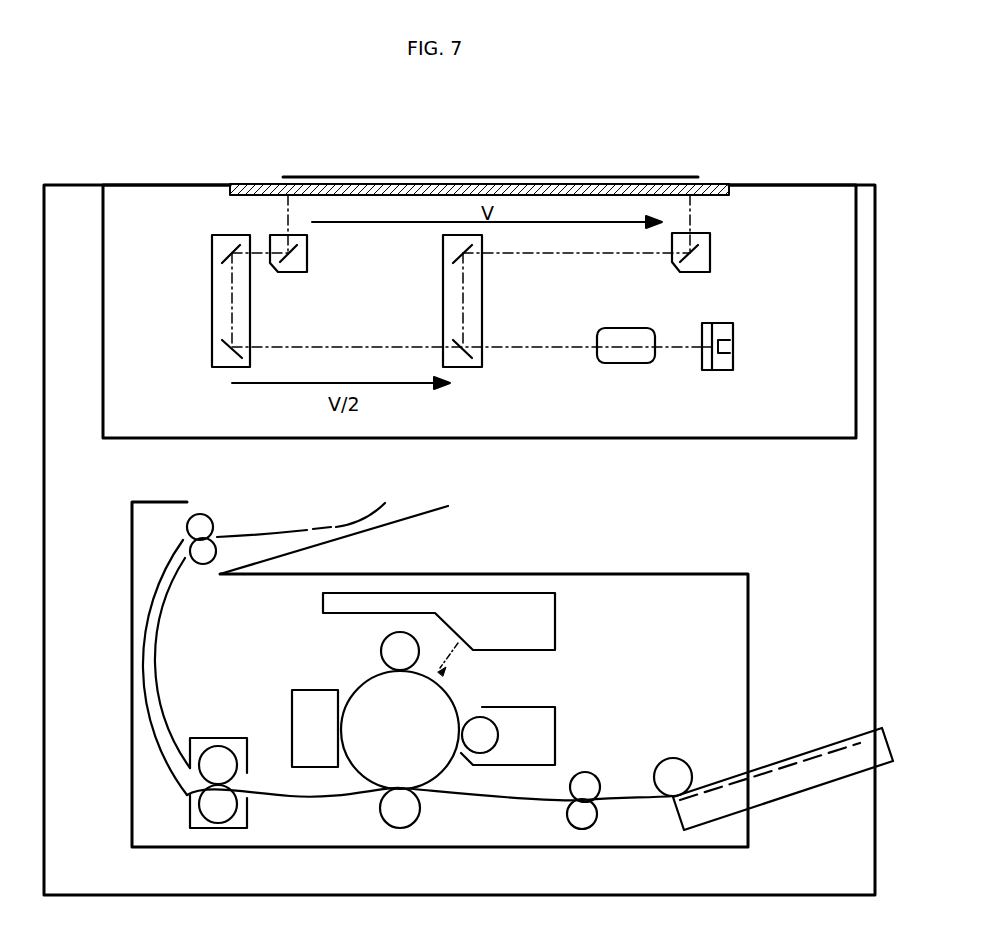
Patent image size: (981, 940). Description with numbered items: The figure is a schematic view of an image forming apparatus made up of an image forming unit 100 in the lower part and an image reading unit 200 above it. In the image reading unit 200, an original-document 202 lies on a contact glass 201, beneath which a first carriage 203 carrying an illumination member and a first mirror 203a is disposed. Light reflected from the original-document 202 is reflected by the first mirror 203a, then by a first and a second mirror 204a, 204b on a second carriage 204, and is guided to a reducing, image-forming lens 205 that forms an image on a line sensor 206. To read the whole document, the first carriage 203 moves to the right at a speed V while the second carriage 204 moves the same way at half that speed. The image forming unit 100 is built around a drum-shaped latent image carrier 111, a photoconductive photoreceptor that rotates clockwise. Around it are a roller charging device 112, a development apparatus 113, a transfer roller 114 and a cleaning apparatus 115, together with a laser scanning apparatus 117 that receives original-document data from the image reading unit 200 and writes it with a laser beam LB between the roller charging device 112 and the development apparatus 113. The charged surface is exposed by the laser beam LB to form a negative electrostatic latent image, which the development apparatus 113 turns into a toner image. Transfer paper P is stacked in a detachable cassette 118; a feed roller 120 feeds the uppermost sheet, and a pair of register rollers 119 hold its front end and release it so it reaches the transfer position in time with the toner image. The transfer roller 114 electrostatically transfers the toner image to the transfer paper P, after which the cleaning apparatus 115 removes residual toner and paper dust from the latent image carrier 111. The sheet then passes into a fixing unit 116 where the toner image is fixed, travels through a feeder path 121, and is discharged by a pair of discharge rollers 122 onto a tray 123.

The image forming unit 100 is at (750, 594).
The latent image carrier 111 is at (450, 693).
The roller charging device 112 is at (381, 648).
The development apparatus 113 is at (556, 717).
The transfer roller 114 is at (427, 812).
The cleaning apparatus 115 is at (302, 689).
The fixing unit 116 is at (248, 808).
The laser scanning apparatus 117 is at (556, 609).
The cassette 118 is at (792, 800).
The pair of register rollers 119 is at (593, 771).
The feed roller 120 is at (673, 758).
The feeder path 121 is at (153, 654).
The pair of discharge rollers 122 is at (205, 513).
The tray 123 is at (433, 507).
The image reading unit 200 is at (798, 184).
The contact glass 201 is at (262, 170).
The original-document 202 is at (367, 176).
The first carriage 203 is at (309, 256).
The first mirror 203a is at (293, 266).
The second carriage 204 is at (211, 297).
The first mirror of second carriage 204a is at (221, 254).
The second mirror of second carriage 204b is at (222, 350).
The reducing, image-forming lens 205 is at (625, 365).
The line sensor 206 is at (716, 372).
The transfer paper P is at (277, 532).
The laser beam LB is at (453, 674).